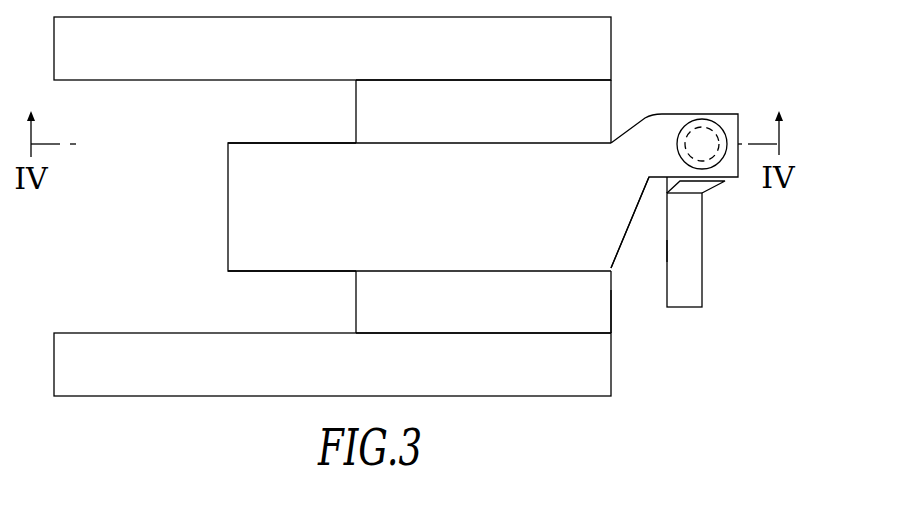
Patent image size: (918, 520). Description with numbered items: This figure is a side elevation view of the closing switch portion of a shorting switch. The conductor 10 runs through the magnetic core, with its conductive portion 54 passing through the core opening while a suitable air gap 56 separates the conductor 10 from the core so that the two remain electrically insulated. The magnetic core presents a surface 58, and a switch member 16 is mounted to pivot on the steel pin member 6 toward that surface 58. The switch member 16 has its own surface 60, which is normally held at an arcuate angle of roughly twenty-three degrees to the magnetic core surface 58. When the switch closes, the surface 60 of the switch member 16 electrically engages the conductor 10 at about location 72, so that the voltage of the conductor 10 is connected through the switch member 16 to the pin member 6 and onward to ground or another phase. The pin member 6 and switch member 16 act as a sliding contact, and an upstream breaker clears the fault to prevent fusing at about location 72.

The conductor 10 is at (612, 58).
The pin member 6 is at (714, 118).
The switch member 16 is at (703, 241).
The surface of the switch member 60 is at (668, 247).
The magnetic core surface 58 is at (620, 250).
The engagement location 72 is at (611, 313).
The air gap 56 is at (278, 100).
The conductive portion 54 is at (470, 98).